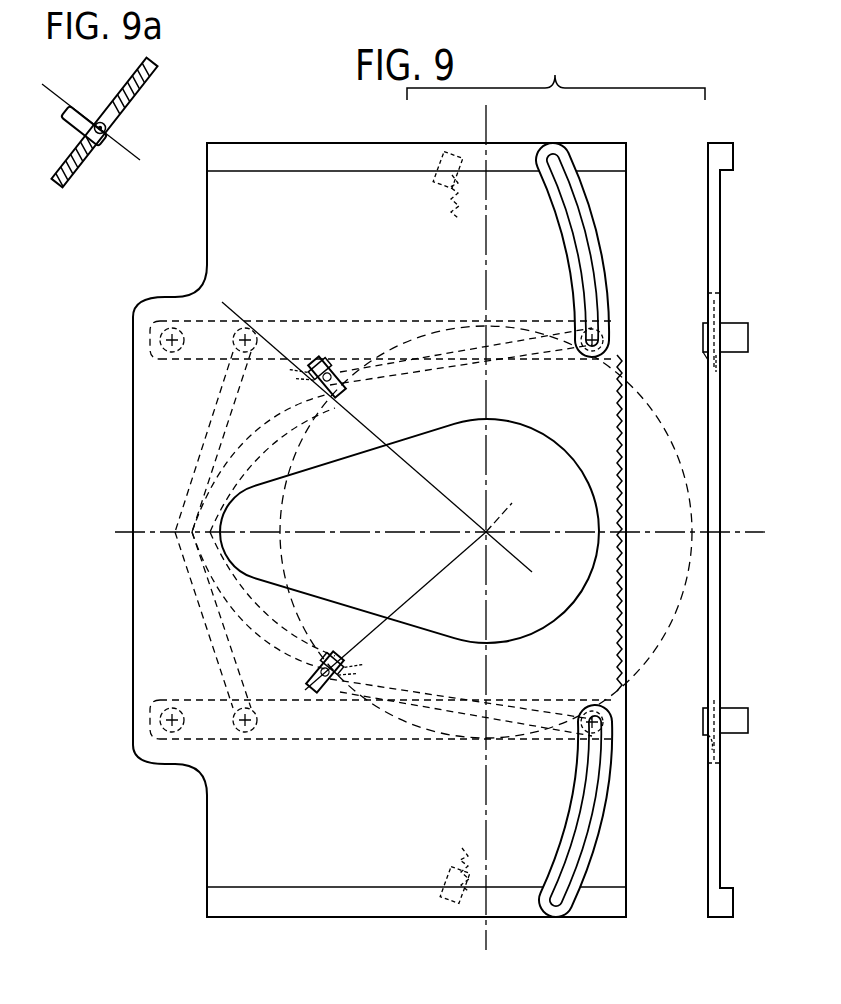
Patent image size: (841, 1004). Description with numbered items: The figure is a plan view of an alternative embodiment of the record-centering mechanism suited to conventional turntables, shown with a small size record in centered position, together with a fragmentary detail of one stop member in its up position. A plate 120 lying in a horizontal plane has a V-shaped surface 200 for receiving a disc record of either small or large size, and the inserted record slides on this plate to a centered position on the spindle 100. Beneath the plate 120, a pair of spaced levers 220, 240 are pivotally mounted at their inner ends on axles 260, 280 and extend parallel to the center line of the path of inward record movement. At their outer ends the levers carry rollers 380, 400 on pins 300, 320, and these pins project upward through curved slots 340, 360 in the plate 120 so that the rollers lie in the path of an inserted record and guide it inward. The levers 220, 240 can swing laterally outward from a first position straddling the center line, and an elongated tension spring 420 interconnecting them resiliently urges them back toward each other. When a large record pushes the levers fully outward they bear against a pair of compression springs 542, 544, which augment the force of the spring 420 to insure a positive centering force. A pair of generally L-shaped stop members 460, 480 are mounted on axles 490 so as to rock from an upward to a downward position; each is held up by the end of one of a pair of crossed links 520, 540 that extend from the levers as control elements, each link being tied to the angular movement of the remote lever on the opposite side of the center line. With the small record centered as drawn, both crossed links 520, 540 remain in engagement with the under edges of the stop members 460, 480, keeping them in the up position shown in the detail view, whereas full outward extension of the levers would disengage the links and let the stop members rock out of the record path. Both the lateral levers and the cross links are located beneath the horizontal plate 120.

In FIG. 9, the spindle 100 is at (490, 527).
In FIG. 9, the plate 120 is at (207, 831).
In FIG. 9, the V-shaped surface 200 is at (721, 413).
In FIG. 9, the lever 220 is at (520, 704).
In FIG. 9, the lever 240 is at (518, 352).
In FIG. 9, the axle 260 is at (208, 690).
In FIG. 9, the axle 280 is at (183, 352).
In FIG. 9, the pin 300 is at (723, 758).
In FIG. 9, the pin 320 is at (719, 379).
In FIG. 9, the curved slot 340 is at (578, 867).
In FIG. 9, the curved slot 360 is at (598, 283).
In FIG. 9, the roller 380 is at (606, 720).
In FIG. 9, the roller 400 is at (606, 330).
In FIG. 9, the elongated spring 420 is at (616, 405).
In FIG. 9, the stop member 460 is at (337, 672).
In FIG. 9a, the stop member 480 is at (72, 128).
In FIG. 9, the stop member 480 is at (342, 378).
In FIG. 9a, the axle 490 is at (108, 128).
In FIG. 9, the axle 490 is at (358, 430).
In FIG. 9, the crossed link 520 is at (218, 615).
In FIG. 9, the crossed link 540 is at (218, 427).
In FIG. 9, the compression spring 542 is at (470, 838).
In FIG. 9, the compression spring 544 is at (464, 212).